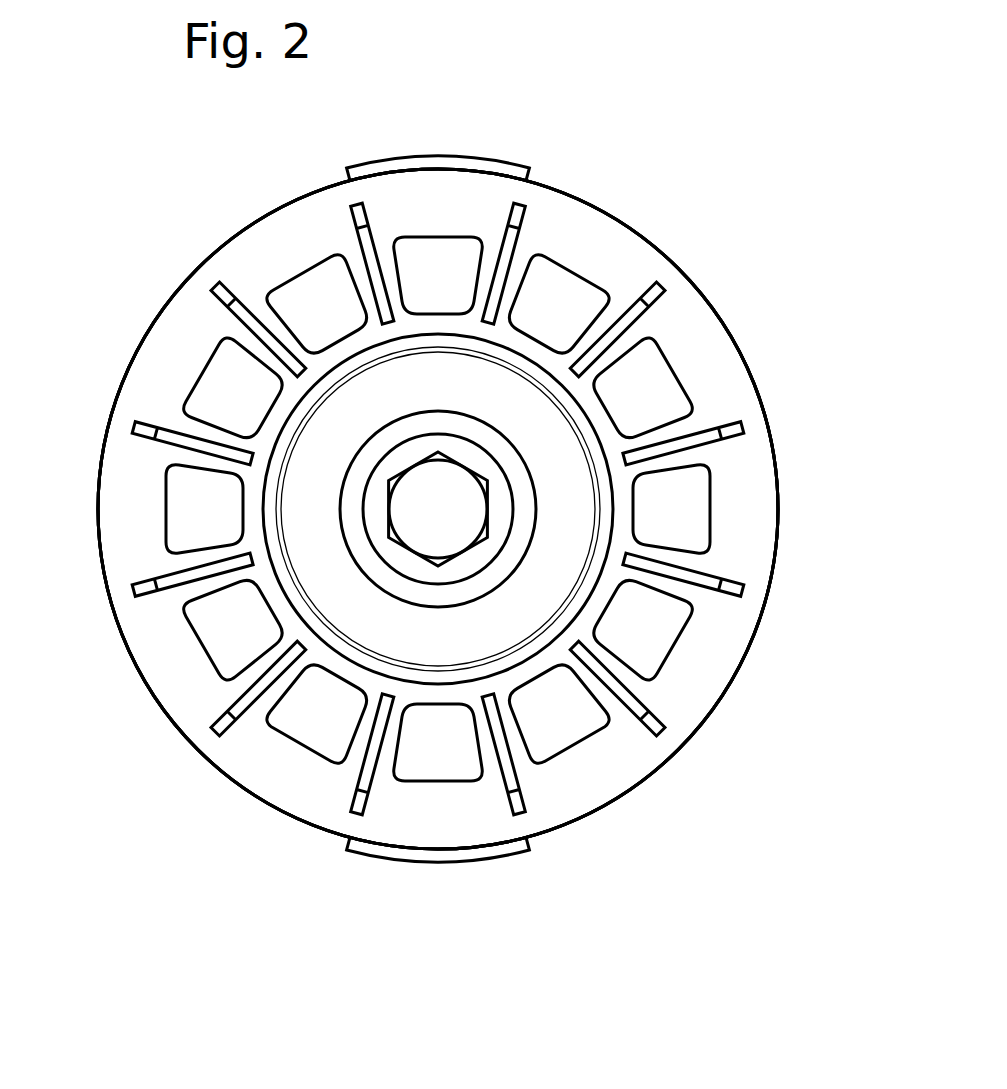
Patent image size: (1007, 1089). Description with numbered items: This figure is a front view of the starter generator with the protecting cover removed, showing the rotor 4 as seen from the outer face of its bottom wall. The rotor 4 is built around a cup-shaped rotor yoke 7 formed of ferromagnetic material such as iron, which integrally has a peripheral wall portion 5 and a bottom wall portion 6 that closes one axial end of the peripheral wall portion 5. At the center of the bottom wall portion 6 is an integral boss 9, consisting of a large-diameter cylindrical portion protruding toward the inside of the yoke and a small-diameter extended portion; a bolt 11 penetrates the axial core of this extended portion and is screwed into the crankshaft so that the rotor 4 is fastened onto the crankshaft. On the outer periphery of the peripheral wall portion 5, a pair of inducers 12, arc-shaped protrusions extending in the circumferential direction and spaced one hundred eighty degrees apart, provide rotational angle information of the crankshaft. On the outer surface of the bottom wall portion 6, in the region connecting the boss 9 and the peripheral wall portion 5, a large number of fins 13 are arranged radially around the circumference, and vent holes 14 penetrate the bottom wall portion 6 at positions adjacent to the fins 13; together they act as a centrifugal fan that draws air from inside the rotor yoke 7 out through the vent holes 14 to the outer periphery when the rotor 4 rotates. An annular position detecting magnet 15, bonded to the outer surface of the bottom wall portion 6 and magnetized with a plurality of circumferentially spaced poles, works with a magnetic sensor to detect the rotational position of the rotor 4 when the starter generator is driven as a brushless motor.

The rotor 4 is at (697, 287).
The peripheral wall portion 5 is at (778, 502).
The bottom wall portion 6 is at (727, 388).
The rotor yoke 7 is at (770, 589).
The boss 9 is at (322, 478).
The bolt 11 is at (430, 513).
The inducers 12 is at (483, 156).
The fins 13 is at (512, 243).
The vent holes 14 is at (247, 380).
The position detecting magnet 15 is at (444, 668).